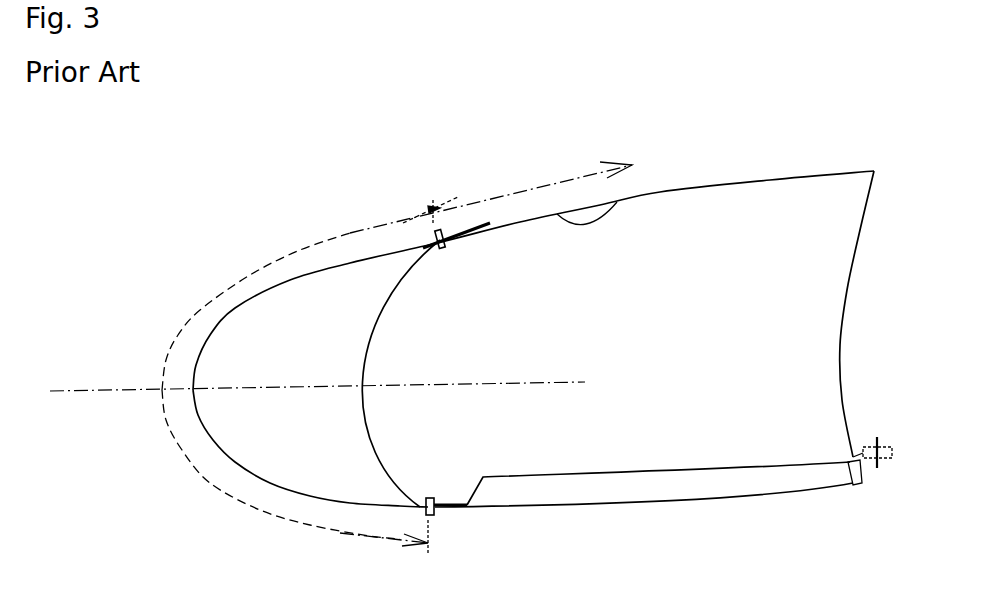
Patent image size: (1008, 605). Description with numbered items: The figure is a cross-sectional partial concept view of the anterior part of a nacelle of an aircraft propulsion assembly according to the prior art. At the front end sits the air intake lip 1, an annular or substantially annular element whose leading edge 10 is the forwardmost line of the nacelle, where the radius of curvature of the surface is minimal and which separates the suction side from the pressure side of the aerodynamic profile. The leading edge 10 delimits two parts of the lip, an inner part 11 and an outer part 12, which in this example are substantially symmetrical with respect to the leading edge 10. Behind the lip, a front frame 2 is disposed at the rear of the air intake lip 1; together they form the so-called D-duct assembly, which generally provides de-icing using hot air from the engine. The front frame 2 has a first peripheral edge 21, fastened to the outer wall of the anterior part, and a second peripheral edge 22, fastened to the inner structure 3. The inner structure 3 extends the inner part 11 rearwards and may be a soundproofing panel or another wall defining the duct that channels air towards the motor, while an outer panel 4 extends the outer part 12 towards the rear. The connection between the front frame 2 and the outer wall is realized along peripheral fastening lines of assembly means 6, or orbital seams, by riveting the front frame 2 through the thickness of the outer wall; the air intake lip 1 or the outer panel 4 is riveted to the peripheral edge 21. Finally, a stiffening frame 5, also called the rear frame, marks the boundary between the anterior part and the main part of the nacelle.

The air intake lip 1 is at (289, 465).
The front frame 2 is at (398, 354).
The inner structure 3 is at (547, 527).
The outer panel 4 is at (508, 225).
The stiffening frame 5 is at (840, 327).
The assembly means 6 is at (432, 238).
The leading edge 10 is at (190, 382).
The inner part 11 is at (423, 510).
The outer part 12 is at (402, 247).
The first peripheral edge 21 is at (428, 250).
The second peripheral edge 22 is at (413, 507).